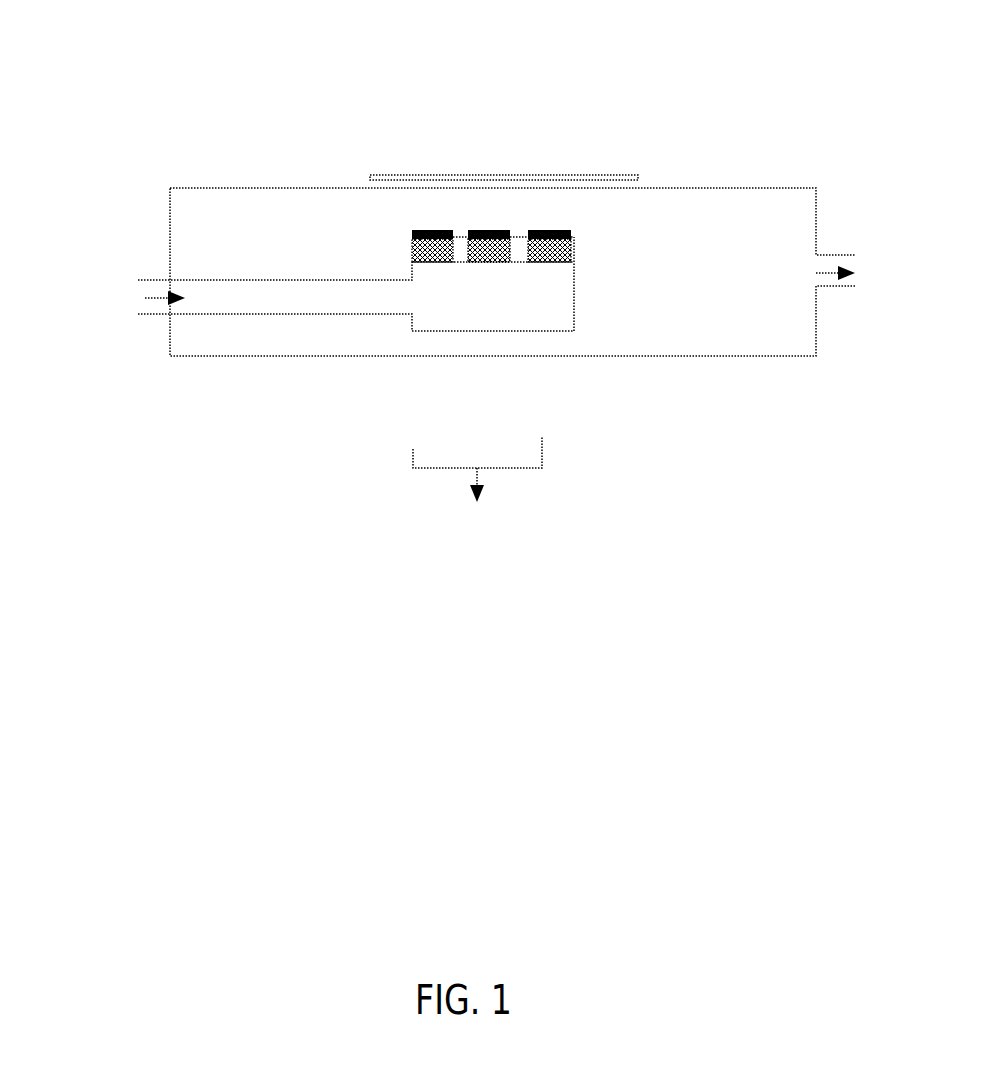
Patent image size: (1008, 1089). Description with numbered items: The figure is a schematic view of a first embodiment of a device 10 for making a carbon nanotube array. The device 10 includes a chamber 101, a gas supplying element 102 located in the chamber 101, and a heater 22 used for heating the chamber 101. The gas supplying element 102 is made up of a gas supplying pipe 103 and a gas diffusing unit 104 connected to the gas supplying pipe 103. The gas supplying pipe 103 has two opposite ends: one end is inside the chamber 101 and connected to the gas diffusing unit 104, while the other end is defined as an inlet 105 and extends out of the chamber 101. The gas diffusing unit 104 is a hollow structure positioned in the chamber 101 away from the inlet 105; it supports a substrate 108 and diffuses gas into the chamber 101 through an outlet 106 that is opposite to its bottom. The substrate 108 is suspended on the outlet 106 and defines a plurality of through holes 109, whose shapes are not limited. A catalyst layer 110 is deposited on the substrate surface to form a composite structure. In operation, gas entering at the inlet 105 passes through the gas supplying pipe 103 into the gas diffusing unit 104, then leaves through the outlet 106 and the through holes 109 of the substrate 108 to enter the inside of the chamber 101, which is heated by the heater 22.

The device 10 is at (478, 62).
The chamber 101 is at (735, 215).
The gas supplying element 102 is at (477, 491).
The gas supplying pipe 103 is at (323, 305).
The gas diffusing unit 104 is at (527, 313).
The inlet 105 is at (163, 307).
The outlet 106 is at (498, 270).
The substrate 108 is at (574, 240).
The through holes 109 is at (518, 240).
The catalyst layer 110 is at (412, 230).
The heater 22 is at (485, 175).